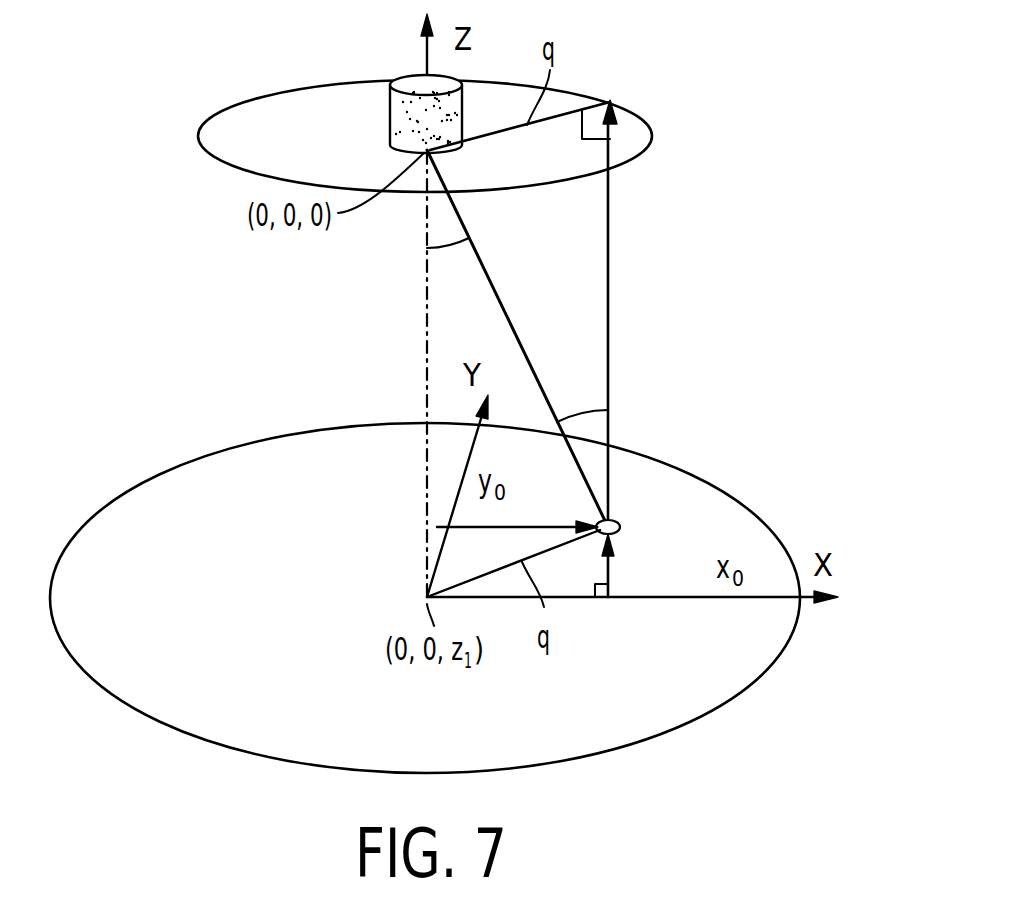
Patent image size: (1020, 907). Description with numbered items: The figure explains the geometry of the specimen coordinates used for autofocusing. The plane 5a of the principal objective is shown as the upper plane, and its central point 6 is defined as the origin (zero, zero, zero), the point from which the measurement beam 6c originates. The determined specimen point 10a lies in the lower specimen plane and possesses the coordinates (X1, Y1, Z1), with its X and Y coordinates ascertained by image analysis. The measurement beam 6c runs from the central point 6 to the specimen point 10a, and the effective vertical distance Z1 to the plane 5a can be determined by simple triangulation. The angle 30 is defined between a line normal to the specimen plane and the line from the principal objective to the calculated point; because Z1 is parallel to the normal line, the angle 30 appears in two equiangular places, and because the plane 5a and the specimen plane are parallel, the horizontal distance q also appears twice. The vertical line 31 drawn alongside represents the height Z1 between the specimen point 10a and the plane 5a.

The plane of the principal objective 5a is at (235, 156).
The central point 6 is at (390, 107).
The measurement beam 6c is at (526, 356).
The target region 10a is at (618, 525).
The angle 30 is at (443, 222).
The vertical projection line z1 31 is at (610, 308).